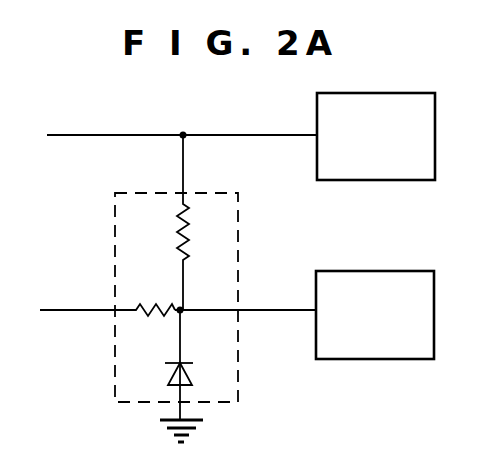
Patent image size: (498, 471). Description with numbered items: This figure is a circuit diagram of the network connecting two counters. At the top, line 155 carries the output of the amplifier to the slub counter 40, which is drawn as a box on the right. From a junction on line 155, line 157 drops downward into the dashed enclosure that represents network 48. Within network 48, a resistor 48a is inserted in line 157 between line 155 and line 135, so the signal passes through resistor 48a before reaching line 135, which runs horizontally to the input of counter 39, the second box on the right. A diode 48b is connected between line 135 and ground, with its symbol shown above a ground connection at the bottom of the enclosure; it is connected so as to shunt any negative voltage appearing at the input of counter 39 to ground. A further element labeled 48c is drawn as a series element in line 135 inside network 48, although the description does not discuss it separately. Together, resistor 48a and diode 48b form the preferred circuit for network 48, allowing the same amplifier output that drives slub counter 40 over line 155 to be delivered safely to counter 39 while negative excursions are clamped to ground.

The line 155 is at (104, 135).
The line 157 is at (183, 165).
The network 48 is at (115, 193).
The resistor 48a is at (188, 222).
The diode 48b is at (190, 382).
The resistor 48c is at (136, 305).
The line 135 is at (62, 310).
The slub counter 40 is at (393, 146).
The counter 39 is at (387, 331).